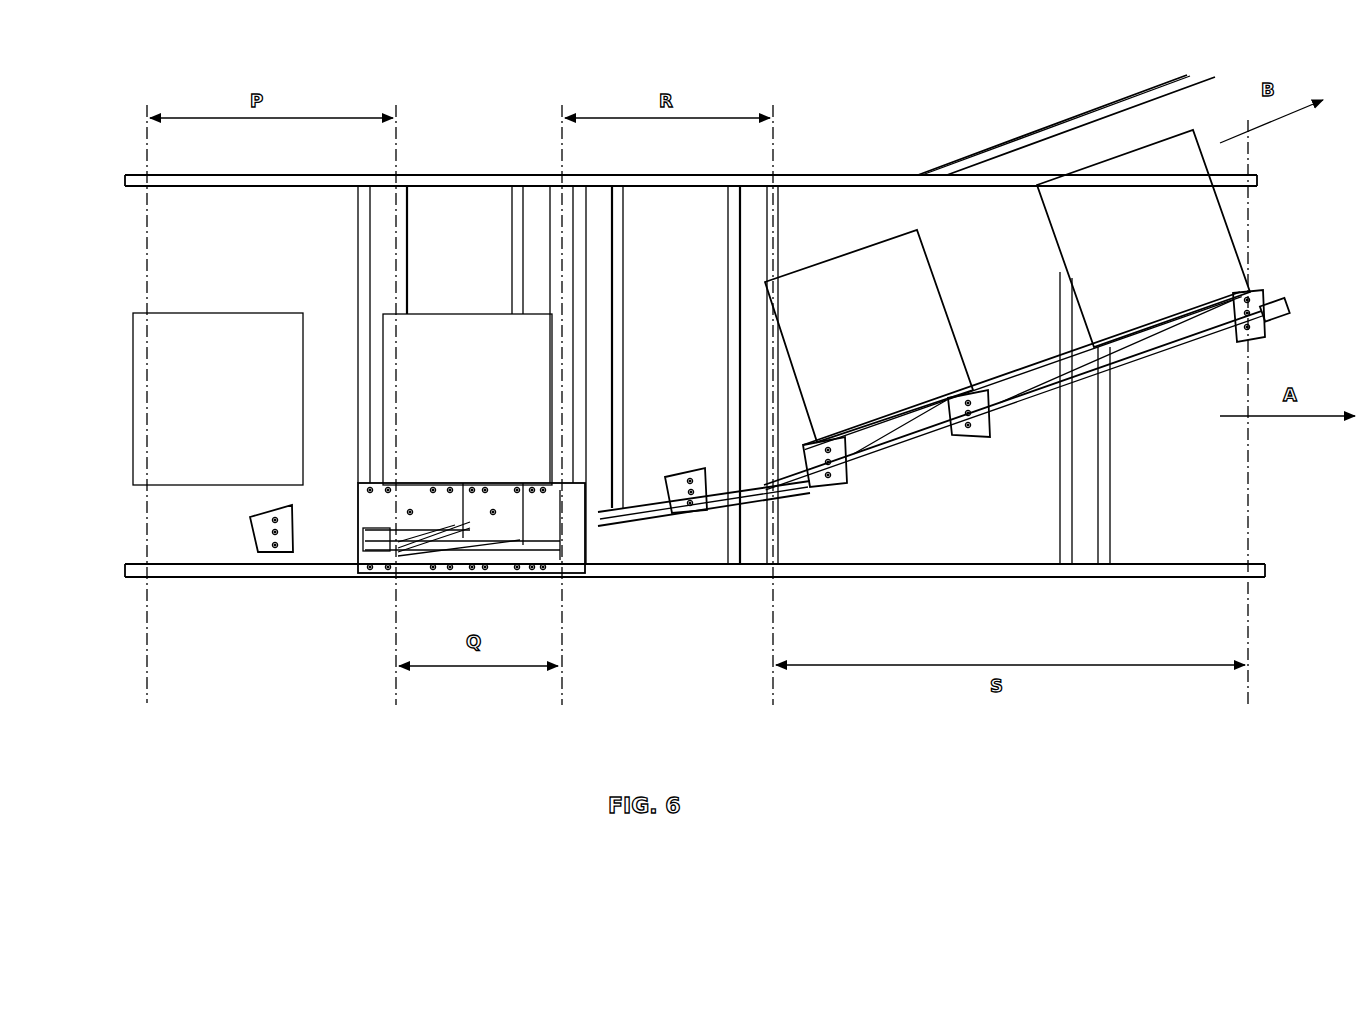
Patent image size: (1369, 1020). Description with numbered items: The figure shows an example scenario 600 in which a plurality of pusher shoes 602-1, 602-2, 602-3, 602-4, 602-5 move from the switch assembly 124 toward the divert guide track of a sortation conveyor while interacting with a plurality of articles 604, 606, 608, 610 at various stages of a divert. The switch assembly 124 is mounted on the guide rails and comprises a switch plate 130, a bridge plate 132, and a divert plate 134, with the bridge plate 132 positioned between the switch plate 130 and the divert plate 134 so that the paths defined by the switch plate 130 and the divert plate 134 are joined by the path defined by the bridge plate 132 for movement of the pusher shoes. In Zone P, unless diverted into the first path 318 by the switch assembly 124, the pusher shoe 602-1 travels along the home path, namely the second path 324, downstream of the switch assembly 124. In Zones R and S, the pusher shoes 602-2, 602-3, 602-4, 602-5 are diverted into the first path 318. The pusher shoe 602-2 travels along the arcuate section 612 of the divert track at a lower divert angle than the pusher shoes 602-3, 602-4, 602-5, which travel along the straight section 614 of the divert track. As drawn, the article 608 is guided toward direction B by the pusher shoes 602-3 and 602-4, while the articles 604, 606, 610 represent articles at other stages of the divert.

The example scenario 600 is at (112, 115).
The article 604 is at (262, 308).
The article 606 is at (433, 310).
The article 608 is at (869, 336).
The article 610 is at (1143, 238).
The arcuate section 612 is at (647, 477).
The straight section 614 is at (1042, 392).
The pusher shoe 602-1 is at (250, 525).
The pusher shoe 602-2 is at (663, 477).
The pusher shoe 602-3 is at (845, 487).
The pusher shoe 602-4 is at (967, 438).
The pusher shoe 602-5 is at (1256, 340).
The switch assembly 124 is at (427, 592).
The switch plate 130 is at (407, 495).
The bridge plate 132 is at (500, 495).
The divert plate 134 is at (556, 478).
The first path 318 is at (647, 512).
The second path 324 is at (558, 548).